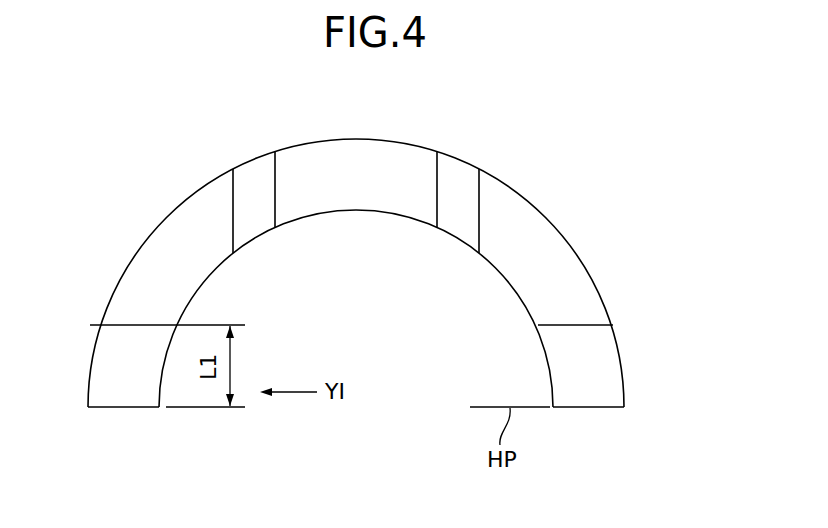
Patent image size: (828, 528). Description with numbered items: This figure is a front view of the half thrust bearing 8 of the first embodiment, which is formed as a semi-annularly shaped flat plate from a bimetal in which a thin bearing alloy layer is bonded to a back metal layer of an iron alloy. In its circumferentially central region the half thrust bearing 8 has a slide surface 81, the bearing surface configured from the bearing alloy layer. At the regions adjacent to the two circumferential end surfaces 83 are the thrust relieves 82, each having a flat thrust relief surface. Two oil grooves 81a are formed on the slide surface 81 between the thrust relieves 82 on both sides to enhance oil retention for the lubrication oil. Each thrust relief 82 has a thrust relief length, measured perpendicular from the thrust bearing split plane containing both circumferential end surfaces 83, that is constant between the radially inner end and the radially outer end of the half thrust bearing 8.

The half thrust bearing 8 is at (373, 272).
The slide surface 81 is at (358, 148).
The oil groove 81a is at (253, 170).
The thrust relief 82 is at (115, 377).
The circumferential end surface 83 is at (110, 408).